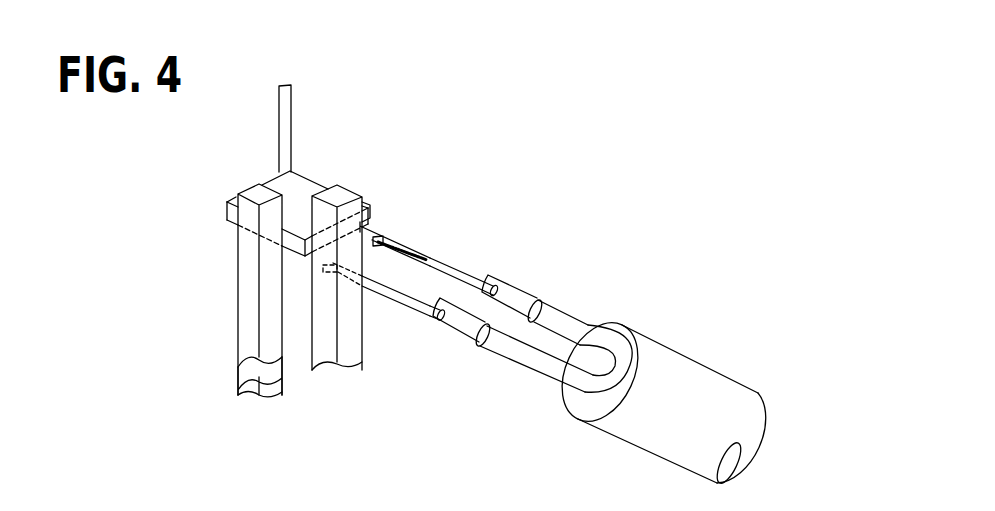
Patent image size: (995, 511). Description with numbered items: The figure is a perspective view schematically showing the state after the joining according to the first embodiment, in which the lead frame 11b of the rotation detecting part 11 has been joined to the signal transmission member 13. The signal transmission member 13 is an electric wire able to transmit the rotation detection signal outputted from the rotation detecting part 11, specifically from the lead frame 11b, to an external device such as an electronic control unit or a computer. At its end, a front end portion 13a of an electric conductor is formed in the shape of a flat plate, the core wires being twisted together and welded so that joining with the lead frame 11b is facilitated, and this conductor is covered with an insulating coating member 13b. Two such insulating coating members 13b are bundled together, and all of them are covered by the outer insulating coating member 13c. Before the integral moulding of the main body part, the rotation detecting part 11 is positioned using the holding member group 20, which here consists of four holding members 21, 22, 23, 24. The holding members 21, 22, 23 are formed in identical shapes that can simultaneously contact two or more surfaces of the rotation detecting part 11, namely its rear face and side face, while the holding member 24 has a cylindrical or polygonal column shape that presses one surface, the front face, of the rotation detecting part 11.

The rotation detecting part 11 is at (313, 172).
The lead frame 11b is at (362, 280).
The signal transmission member 13 is at (476, 189).
The front end portion 13a is at (433, 297).
The insulating coating member 13b is at (557, 318).
The insulating coating member 13c is at (673, 363).
The holding member group 20 is at (279, 343).
The holding member 21 is at (242, 338).
The holding member 22 is at (257, 393).
The holding member 23 is at (330, 320).
The holding member 24 is at (278, 143).